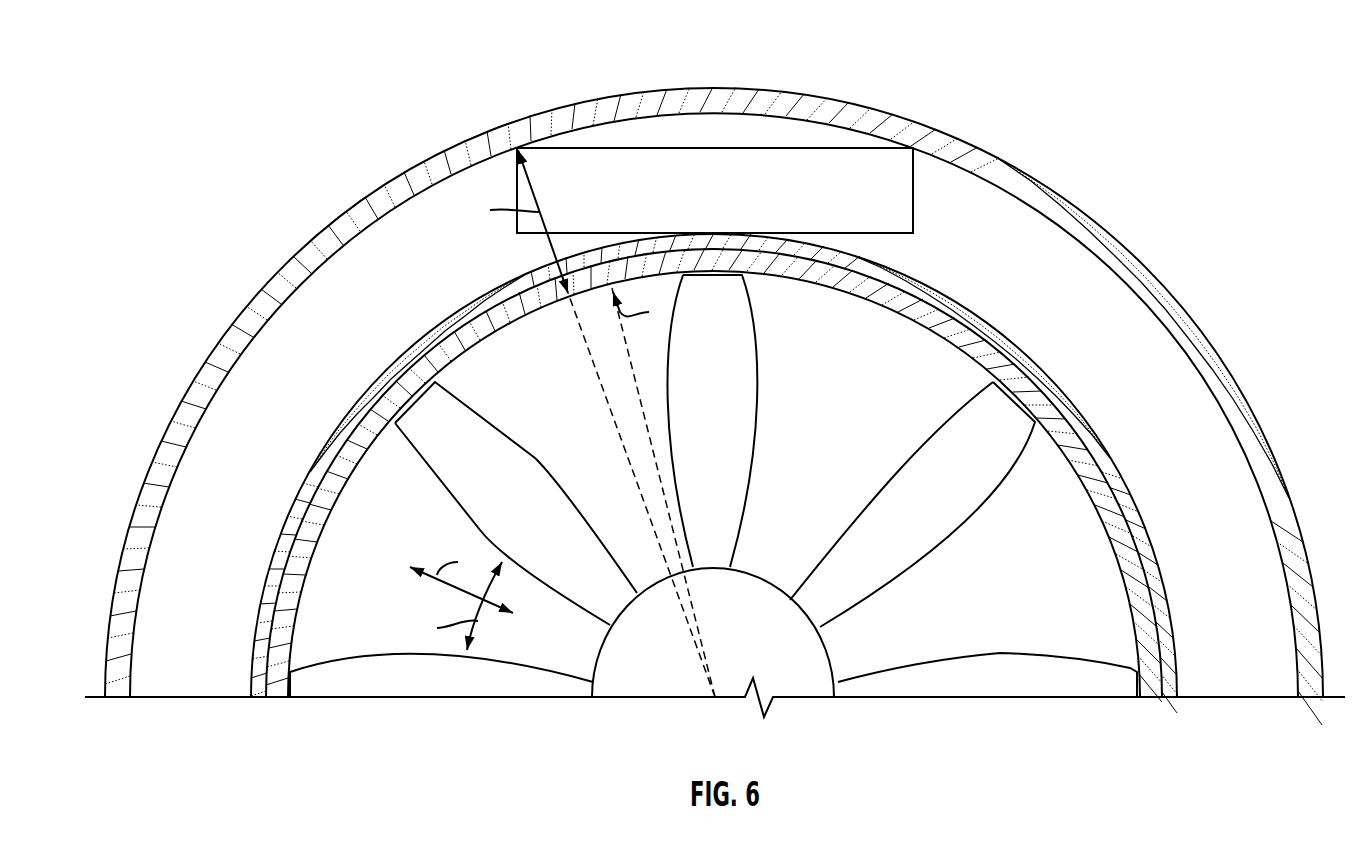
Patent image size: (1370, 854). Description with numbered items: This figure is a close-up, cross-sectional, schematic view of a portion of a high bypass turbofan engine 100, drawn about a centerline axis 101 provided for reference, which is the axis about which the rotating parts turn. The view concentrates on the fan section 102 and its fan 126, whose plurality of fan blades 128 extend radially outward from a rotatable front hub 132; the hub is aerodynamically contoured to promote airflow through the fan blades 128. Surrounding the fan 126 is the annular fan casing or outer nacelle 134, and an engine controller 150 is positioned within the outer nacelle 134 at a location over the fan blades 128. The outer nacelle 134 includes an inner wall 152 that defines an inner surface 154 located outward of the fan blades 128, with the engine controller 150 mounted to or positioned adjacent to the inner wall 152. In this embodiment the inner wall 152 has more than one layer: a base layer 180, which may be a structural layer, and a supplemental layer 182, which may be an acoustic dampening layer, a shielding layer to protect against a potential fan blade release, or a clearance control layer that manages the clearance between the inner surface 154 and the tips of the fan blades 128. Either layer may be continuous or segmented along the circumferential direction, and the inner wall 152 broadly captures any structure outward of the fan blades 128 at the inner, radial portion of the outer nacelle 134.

The turbofan engine 100 is at (1062, 118).
The centerline axis 101 is at (715, 698).
The fan section 102 is at (930, 358).
The fan 126 is at (745, 423).
The fan blades 128 is at (960, 520).
The front hub 132 is at (833, 657).
The outer nacelle 134 is at (1260, 380).
The engine controller 150 is at (728, 197).
The inner wall 152 is at (290, 468).
The inner surface 154 is at (508, 330).
The base layer 180 is at (420, 340).
The supplemental layer 182 is at (360, 450).